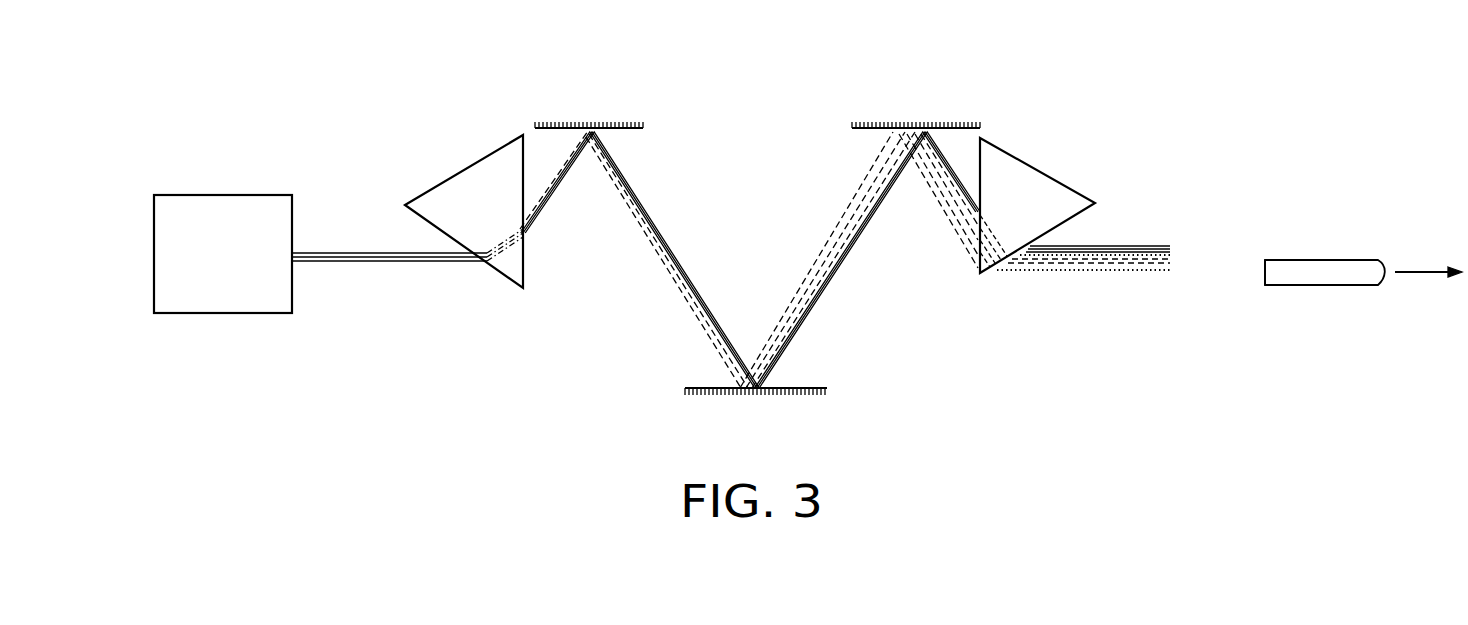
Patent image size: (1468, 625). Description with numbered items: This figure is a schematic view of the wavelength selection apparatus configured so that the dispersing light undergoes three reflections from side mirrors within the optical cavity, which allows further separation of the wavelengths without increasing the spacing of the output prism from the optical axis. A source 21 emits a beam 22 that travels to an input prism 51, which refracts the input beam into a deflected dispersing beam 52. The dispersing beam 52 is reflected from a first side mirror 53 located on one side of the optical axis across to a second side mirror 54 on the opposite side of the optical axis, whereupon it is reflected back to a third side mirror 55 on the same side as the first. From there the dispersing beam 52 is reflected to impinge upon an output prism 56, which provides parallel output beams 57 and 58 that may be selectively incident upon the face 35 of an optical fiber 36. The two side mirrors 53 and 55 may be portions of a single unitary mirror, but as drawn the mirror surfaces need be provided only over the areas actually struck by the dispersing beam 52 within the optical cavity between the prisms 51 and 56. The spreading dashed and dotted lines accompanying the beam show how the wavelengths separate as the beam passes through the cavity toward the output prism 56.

The source 21 is at (183, 194).
The beam 22 is at (370, 263).
The input prism 51 is at (453, 176).
The dispersing beam 52 is at (557, 192).
The first side mirror 53 is at (618, 128).
The second side mirror 54 is at (813, 388).
The side mirror 55 is at (887, 128).
The output prism 56 is at (1027, 157).
The output beam 57 is at (1105, 247).
The output beam 58 is at (1087, 273).
The optical fiber 36 is at (1327, 265).
The face 35 is at (1263, 275).